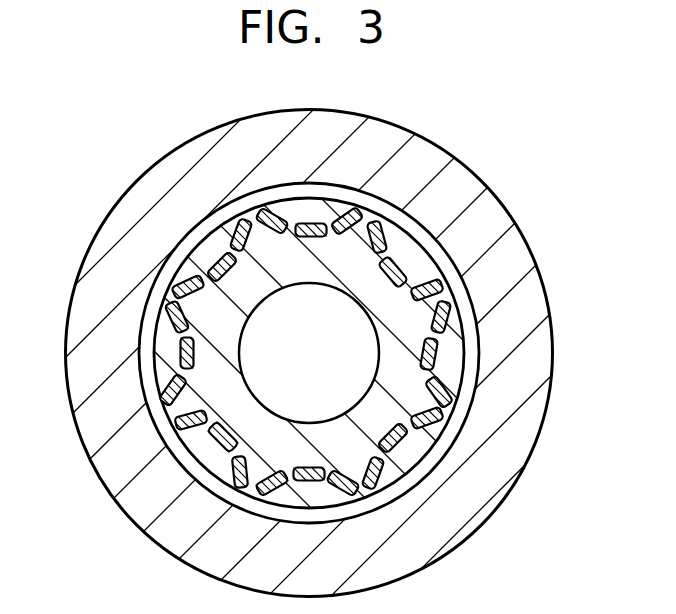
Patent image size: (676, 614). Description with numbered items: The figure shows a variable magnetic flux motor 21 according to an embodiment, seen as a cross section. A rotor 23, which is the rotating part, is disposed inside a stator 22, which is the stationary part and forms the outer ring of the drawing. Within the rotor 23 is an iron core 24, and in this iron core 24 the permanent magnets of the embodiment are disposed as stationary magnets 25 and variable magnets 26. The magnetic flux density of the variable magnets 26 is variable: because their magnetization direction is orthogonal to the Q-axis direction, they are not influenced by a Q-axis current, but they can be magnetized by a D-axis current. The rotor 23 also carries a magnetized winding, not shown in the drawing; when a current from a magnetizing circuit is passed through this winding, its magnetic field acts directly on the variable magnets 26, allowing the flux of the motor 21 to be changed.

The variable magnetic flux motor 21 is at (338, 307).
The stator 22 is at (538, 438).
The rotor 23 is at (338, 307).
The iron core 24 is at (422, 272).
The stationary magnets 25 is at (455, 292).
The variable magnets 26 is at (437, 345).